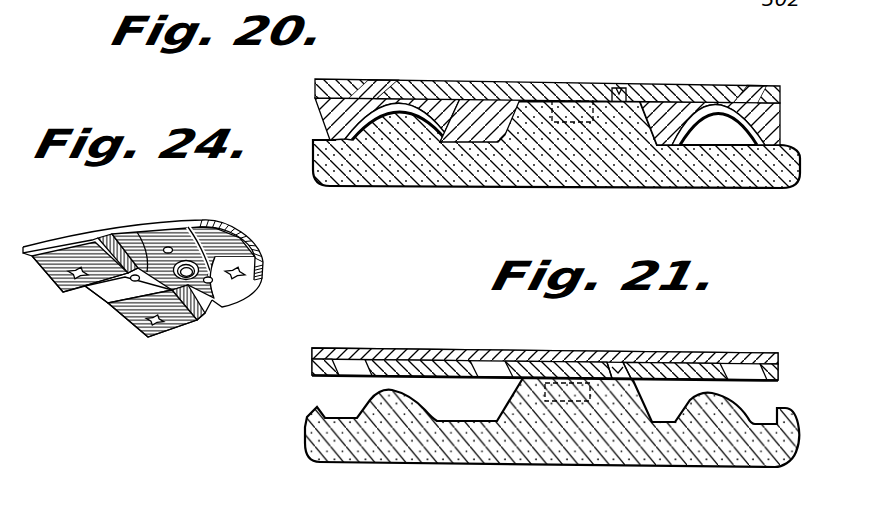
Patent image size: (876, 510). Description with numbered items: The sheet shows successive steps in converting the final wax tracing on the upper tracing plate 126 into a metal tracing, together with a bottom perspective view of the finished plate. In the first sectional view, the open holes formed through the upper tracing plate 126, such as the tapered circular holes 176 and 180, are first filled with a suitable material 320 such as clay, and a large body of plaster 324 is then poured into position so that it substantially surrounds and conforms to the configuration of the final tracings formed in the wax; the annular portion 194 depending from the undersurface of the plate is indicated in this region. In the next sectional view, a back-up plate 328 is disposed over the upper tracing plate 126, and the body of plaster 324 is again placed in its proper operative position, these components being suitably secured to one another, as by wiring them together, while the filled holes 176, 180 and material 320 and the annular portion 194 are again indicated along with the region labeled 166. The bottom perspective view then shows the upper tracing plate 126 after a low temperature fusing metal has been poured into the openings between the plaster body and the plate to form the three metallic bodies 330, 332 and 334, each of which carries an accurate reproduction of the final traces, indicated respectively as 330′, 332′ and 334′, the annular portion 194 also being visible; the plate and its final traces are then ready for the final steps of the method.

In FIG. 20, the upper tracing plate 126 is at (431, 81).
In FIG. 21, the upper tracing plate 126 is at (313, 369).
In FIG. 24, the upper tracing plate 126 is at (152, 222).
In FIG. 20, the end block 166 is at (733, 90).
In FIG. 21, the end block 166 is at (736, 363).
In FIG. 20, the circular hole 176 is at (510, 99).
In FIG. 21, the circular hole 176 is at (504, 361).
In FIG. 20, the circular hole 180 is at (353, 80).
In FIG. 21, the circular hole 180 is at (347, 361).
In FIG. 20, the annular portion 194 is at (575, 100).
In FIG. 21, the annular portion 194 is at (576, 380).
In FIG. 24, the annular portion 194 is at (150, 290).
In FIG. 20, the filling material 320 is at (620, 84).
In FIG. 21, the filling material 320 is at (617, 365).
In FIG. 20, the body of plaster 324 is at (513, 175).
In FIG. 21, the body of plaster 324 is at (463, 453).
In FIG. 21, the back-up plate 328 is at (710, 356).
In FIG. 24, the metallic body 330 is at (123, 327).
In FIG. 24, the final trace reproduction 330′ is at (167, 327).
In FIG. 24, the metallic body 332 is at (250, 245).
In FIG. 24, the final trace reproduction 332′ is at (268, 283).
In FIG. 24, the metallic body 334 is at (48, 278).
In FIG. 24, the final trace reproduction 334′ is at (73, 262).